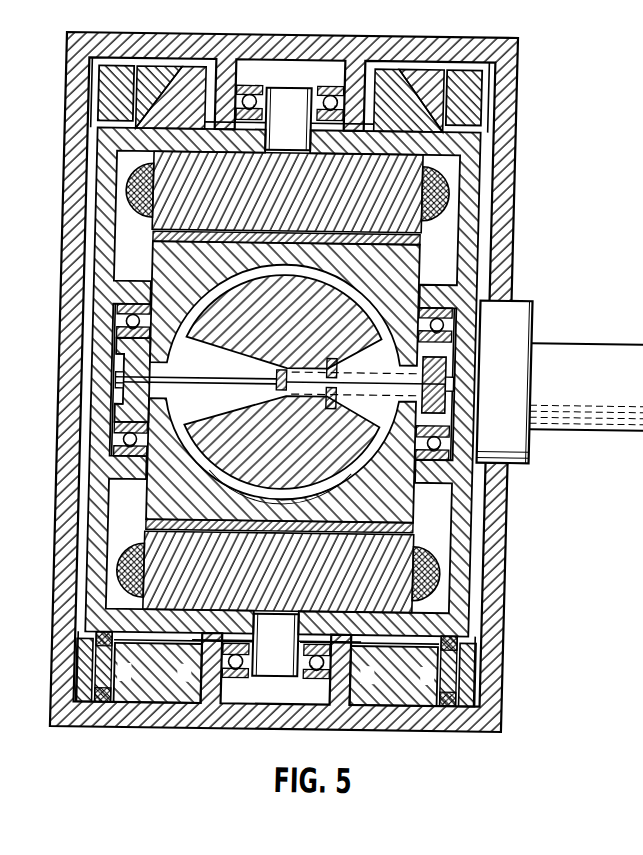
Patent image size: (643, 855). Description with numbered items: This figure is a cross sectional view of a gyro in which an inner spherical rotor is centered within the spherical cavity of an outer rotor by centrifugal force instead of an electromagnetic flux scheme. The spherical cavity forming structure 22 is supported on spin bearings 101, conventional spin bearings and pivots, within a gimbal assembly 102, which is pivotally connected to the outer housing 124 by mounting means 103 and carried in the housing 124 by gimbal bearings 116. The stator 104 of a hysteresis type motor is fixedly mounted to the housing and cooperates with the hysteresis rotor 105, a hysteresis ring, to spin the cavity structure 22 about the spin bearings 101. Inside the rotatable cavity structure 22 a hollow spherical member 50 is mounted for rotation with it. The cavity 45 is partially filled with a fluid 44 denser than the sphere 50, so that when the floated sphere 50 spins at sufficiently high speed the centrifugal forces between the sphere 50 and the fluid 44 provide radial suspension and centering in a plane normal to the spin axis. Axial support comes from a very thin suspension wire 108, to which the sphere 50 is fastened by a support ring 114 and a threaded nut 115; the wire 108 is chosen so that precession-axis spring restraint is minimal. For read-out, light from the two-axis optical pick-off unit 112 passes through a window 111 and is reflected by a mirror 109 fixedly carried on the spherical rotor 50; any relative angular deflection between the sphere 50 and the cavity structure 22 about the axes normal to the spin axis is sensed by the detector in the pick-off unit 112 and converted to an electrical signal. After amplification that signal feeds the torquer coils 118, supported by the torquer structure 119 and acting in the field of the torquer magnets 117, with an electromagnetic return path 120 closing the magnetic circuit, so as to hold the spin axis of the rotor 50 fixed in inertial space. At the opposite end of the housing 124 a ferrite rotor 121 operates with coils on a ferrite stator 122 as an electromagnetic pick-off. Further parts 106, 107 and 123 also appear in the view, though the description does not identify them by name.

The spherical cavity forming structure 22 is at (183, 261).
The fluid 44 is at (214, 301).
The cavity 45 is at (356, 290).
The spherical rotor 50 is at (354, 316).
The spin bearings 101 is at (130, 318).
The gimbal assembly 102 is at (470, 152).
The mounting means 103 is at (277, 106).
The stator 104 is at (181, 167).
The hysteresis rotor 105 is at (425, 522).
The upper rotor shell 106 is at (174, 450).
The hub 107 is at (236, 336).
The suspension wire 108 is at (136, 393).
The mirror 109 is at (350, 359).
The window 111 is at (454, 364).
The optical pick-off unit 112 is at (595, 354).
The support ring 114 is at (284, 385).
The threaded nut 115 is at (126, 375).
The gimbal bearings 116 is at (332, 92).
The torquer magnets 117 is at (395, 697).
The torquer coils 118 is at (463, 696).
The torquer structure 119 is at (118, 668).
The electromagnetic return path 120 is at (487, 668).
The ferrite rotor 121 is at (426, 74).
The ferrite stator 122 is at (475, 80).
The shim 123 is at (491, 104).
The housing 124 is at (510, 212).